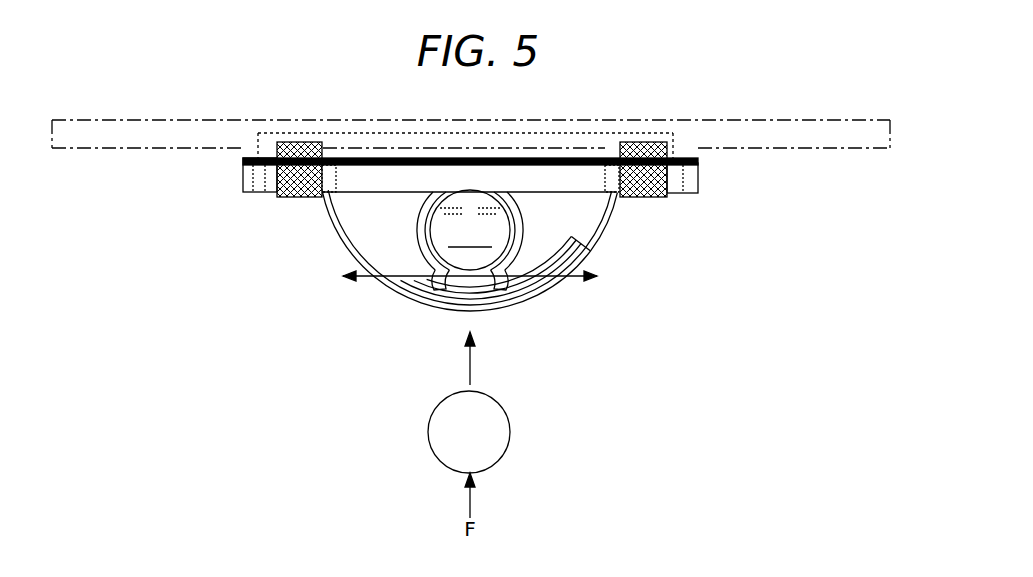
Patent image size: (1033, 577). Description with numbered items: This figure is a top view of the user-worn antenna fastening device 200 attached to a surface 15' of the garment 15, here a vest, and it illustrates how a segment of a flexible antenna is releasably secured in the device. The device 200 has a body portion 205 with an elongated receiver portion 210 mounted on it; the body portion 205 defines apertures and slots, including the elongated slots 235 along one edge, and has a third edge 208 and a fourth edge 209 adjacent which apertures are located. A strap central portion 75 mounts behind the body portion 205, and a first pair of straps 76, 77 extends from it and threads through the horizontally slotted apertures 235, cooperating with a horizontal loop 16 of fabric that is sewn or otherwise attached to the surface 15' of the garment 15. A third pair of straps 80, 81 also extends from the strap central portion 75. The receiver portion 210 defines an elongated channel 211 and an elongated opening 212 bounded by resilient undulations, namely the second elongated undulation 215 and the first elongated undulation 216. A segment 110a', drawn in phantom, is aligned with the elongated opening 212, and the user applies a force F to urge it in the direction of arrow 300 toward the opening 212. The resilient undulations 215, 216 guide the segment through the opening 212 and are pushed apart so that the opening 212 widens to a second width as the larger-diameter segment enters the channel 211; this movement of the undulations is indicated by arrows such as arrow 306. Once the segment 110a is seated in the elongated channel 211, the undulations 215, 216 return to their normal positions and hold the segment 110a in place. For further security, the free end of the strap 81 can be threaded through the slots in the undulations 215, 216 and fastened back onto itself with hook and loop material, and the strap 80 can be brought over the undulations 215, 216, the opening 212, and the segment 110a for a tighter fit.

The garment 15 is at (471, 119).
The surface of garment 15' is at (868, 164).
The horizontal loop 16 is at (492, 120).
The strap central portion 75 is at (243, 155).
The first strap of first pair of straps 76 is at (252, 192).
The second strap of first pair of straps 77 is at (658, 202).
The strap of third pair of straps 80 is at (335, 238).
The first strap of third pair of straps 81 is at (594, 254).
The user-worn antenna fastening device 200 is at (690, 195).
The body portion 205 is at (348, 192).
The third edge of body portion 208 is at (243, 176).
The fourth edge of body portion 209 is at (698, 175).
The elongated receiver portion 210 is at (521, 200).
The elongated channel 211 is at (398, 278).
The elongated opening 212 is at (450, 315).
The second elongated undulation 215 is at (424, 308).
The first elongated undulation 216 is at (532, 300).
The elongated slots 235 is at (338, 140).
The arrow 300 is at (475, 358).
The arrow 306 is at (370, 277).
The segment of flexible antenna body portion 110a is at (470, 230).
The segment of flexible antenna body portion (phantom) 110a' is at (528, 432).